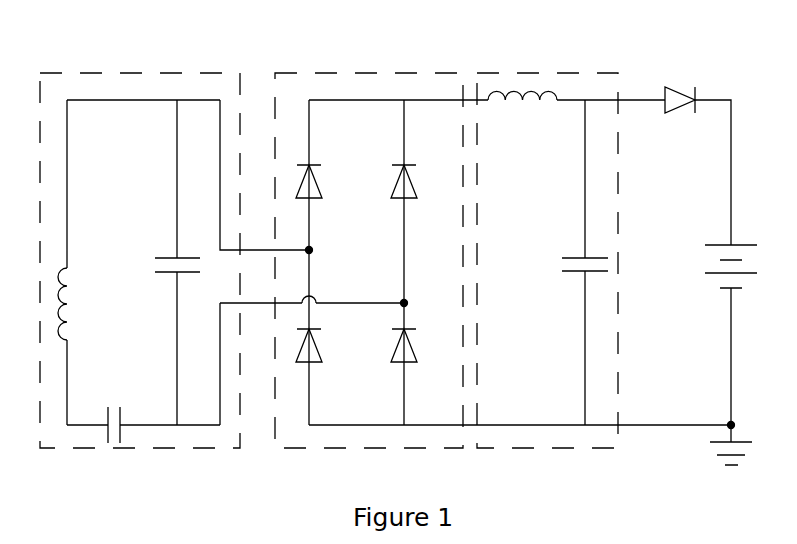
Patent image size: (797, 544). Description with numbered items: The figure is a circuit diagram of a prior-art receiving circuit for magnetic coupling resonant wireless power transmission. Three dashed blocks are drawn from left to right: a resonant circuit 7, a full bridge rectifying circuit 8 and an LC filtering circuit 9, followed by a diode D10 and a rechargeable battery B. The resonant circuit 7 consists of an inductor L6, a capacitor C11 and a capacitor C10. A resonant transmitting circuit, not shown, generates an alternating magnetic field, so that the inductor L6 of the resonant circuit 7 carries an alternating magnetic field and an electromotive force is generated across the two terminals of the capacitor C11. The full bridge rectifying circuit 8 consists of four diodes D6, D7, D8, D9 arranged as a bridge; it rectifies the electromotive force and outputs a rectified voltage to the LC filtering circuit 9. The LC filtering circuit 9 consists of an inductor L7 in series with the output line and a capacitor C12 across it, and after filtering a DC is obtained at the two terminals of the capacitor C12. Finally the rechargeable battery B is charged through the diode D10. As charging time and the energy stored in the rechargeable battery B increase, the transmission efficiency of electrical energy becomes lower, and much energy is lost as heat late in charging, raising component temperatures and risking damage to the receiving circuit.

The resonant circuit 7 is at (140, 73).
The full bridge rectifying circuit 8 is at (370, 73).
The LC filtering circuit 9 is at (570, 73).
The inductor L6 is at (79, 304).
The capacitor C10 is at (111, 406).
The capacitor C11 is at (166, 262).
The diode D6 is at (320, 181).
The diode D7 is at (320, 345).
The diode D8 is at (419, 181).
The diode D9 is at (419, 345).
The inductor L7 is at (522, 112).
The capacitor C12 is at (576, 262).
The diode D10 is at (686, 86).
The rechargeable battery B is at (731, 338).